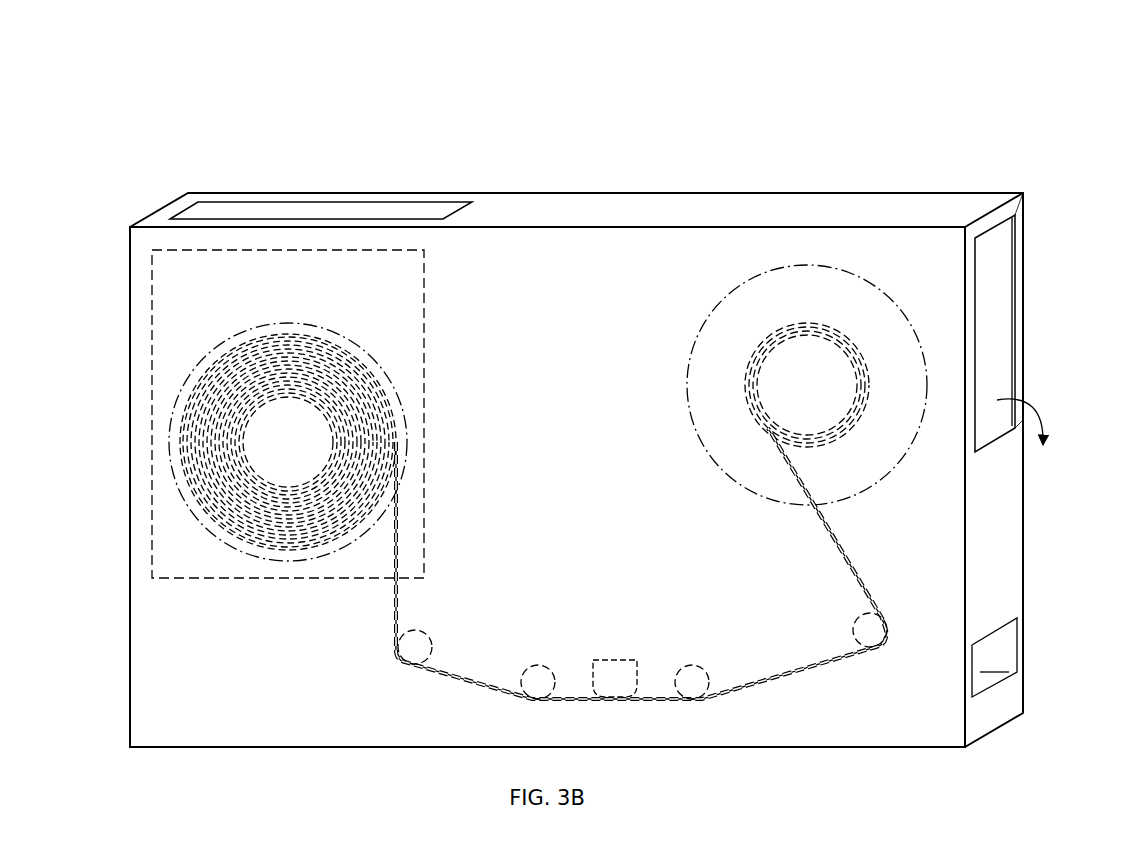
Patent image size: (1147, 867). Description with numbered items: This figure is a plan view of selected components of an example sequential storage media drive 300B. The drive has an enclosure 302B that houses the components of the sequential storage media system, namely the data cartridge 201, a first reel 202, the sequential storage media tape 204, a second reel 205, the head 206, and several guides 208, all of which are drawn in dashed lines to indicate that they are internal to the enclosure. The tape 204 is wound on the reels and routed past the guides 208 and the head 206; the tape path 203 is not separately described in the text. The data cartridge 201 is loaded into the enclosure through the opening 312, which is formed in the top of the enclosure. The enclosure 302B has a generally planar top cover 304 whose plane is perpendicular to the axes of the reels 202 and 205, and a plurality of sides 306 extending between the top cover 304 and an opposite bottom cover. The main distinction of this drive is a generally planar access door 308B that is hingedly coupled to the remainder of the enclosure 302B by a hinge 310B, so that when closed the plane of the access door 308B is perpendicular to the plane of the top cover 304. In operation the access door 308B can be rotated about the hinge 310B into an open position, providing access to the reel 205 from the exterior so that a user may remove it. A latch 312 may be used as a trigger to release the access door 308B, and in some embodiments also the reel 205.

The sequential storage media drive 300B is at (448, 104).
The data cartridge 201 is at (430, 304).
The reel 202 is at (336, 447).
The tape 203 is at (641, 563).
The sequential storage media tape 204 is at (289, 334).
The reel 205 is at (856, 392).
The head 206 is at (617, 668).
The guides 208 is at (408, 658).
The enclosure 302B is at (358, 188).
The top cover 304 is at (138, 634).
The sides 306 is at (580, 204).
The access door 308B is at (1003, 352).
The hinge 310B is at (1018, 290).
The opening / latch 312 is at (253, 211).